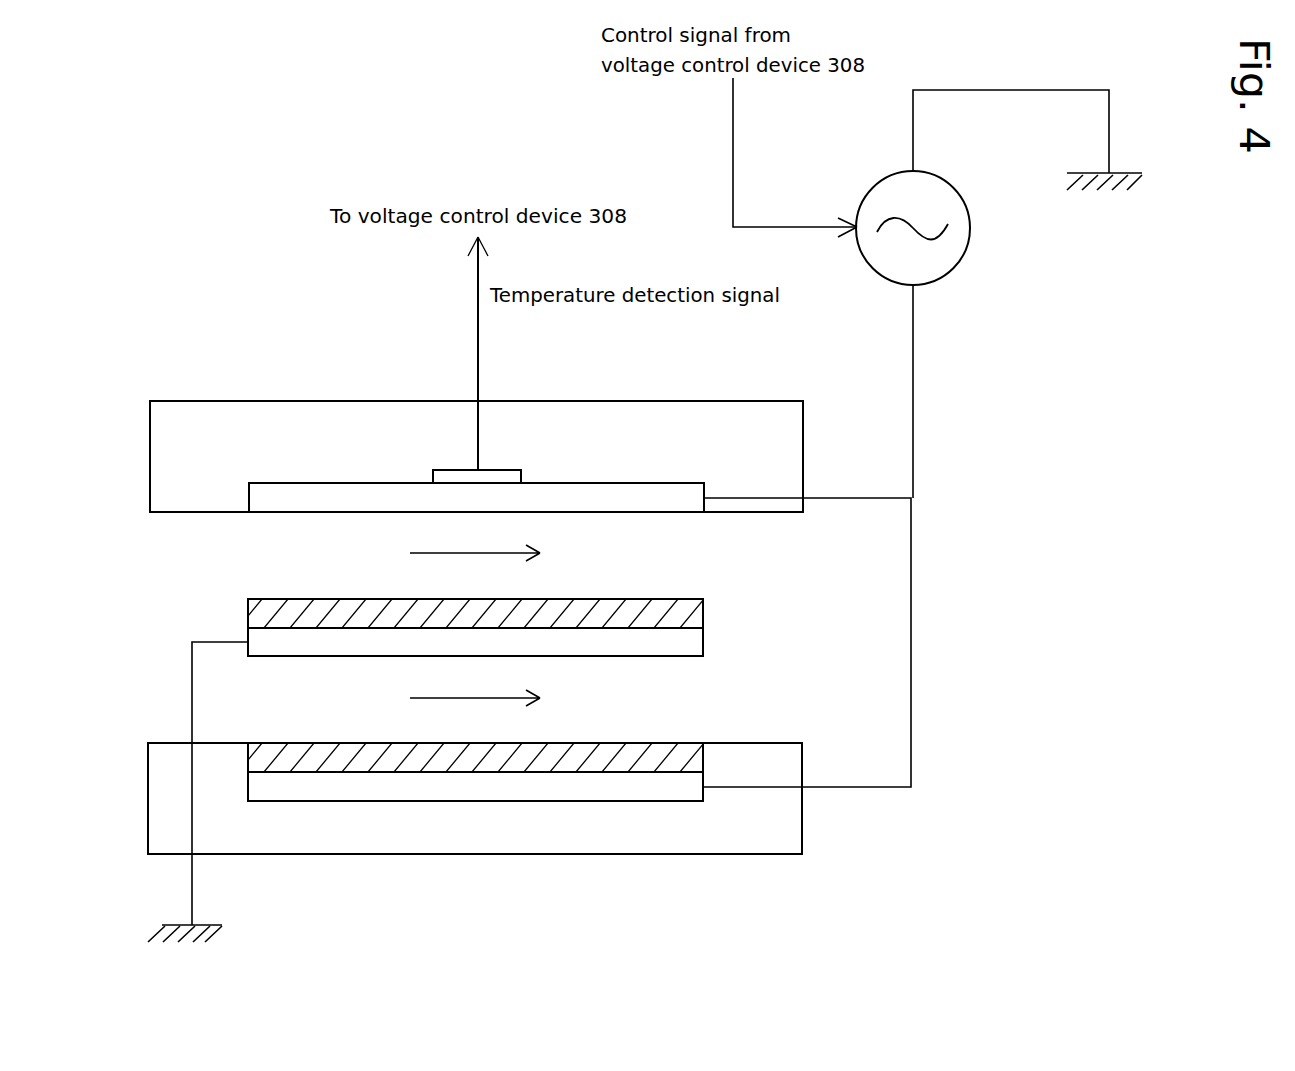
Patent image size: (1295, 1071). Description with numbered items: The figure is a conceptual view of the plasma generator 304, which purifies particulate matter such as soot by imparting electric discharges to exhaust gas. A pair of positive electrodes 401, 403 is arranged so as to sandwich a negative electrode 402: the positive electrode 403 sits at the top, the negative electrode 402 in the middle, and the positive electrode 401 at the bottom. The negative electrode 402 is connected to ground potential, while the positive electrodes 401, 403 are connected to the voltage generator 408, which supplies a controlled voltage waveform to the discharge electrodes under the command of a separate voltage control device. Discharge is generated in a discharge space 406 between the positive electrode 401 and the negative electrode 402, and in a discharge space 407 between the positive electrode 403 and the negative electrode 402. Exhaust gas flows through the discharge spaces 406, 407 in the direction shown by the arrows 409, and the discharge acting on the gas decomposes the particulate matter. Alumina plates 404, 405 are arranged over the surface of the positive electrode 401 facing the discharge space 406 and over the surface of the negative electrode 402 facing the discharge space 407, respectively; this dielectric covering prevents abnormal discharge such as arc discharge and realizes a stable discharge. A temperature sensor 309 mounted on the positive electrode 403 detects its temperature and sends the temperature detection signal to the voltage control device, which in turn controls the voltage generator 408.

The plasma generator 304 is at (287, 207).
The temperature sensor 309 is at (508, 470).
The positive electrode 401 is at (637, 801).
The negative electrode 402 is at (703, 640).
The positive electrode 403 is at (653, 483).
The alumina plate 404 is at (668, 743).
The alumina plate 405 is at (703, 606).
The discharge space 406 is at (262, 680).
The discharge space 407 is at (262, 536).
The voltage generator 408 is at (967, 246).
The arrows 409 is at (410, 553).